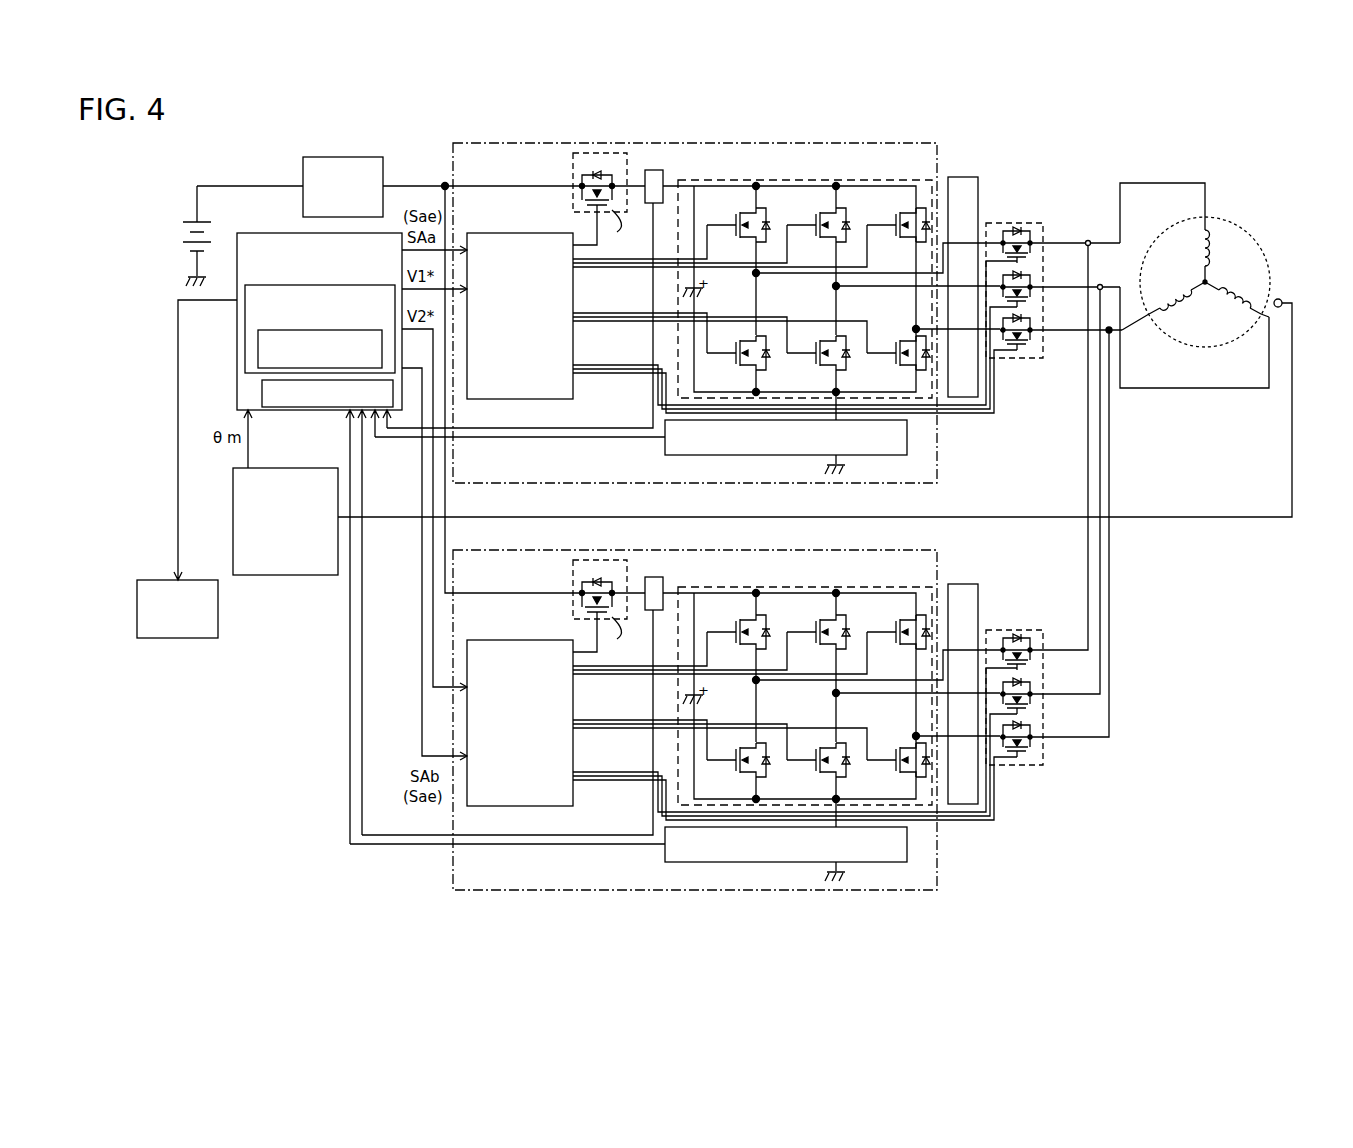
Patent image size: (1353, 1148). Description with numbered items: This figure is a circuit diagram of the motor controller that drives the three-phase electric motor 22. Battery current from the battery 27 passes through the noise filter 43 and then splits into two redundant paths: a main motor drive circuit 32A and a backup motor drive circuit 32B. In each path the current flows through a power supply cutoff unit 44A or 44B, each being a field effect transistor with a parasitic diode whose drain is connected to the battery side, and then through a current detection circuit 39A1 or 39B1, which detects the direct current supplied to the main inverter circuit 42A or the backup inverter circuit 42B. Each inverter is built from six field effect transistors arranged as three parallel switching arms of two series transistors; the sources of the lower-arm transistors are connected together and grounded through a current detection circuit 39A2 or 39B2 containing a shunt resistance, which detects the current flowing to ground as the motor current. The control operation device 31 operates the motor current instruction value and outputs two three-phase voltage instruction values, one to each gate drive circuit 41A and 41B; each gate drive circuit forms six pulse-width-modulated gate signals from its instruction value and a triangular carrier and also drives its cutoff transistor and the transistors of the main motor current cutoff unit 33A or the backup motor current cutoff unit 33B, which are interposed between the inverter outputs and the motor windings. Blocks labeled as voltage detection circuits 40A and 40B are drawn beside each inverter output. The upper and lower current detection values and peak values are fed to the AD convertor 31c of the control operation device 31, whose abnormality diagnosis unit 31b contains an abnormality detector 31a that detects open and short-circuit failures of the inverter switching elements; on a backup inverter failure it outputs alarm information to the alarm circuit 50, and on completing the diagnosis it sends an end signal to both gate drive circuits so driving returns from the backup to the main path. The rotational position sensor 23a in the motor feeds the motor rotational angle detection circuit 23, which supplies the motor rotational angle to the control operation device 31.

The three-phase electric motor 22 is at (1250, 232).
The motor rotational angle detection circuit 23 is at (292, 575).
The rotational position sensor 23a is at (1282, 310).
The battery 27 is at (190, 218).
The control operation device 31 is at (294, 304).
The abnormality detector 31a is at (258, 350).
The abnormality diagnosis unit 31b is at (245, 320).
The AD convertor 31c is at (262, 394).
The main motor drive circuit 32A is at (940, 468).
The backup motor drive circuit 32B is at (940, 875).
The main motor current cutoff unit 33A is at (1025, 222).
The backup motor current cutoff unit 33B is at (1025, 629).
The current detection circuit 39A1 is at (653, 170).
The current detection circuit 39A2 is at (908, 438).
The current detection circuit 39B1 is at (653, 577).
The current detection circuit 39B2 is at (908, 845).
The first voltage detection circuit 40A is at (978, 205).
The second voltage detection circuit 40B is at (978, 612).
The gate drive circuit 41A is at (527, 233).
The gate drive circuit 41B is at (527, 640).
The main inverter circuit 42A is at (751, 198).
The backup inverter circuit 42B is at (751, 605).
The noise filter 43 is at (320, 155).
The power supply cutoff unit 44A is at (573, 175).
The power supply cutoff unit 44B is at (573, 582).
The alarm circuit 50 is at (218, 605).